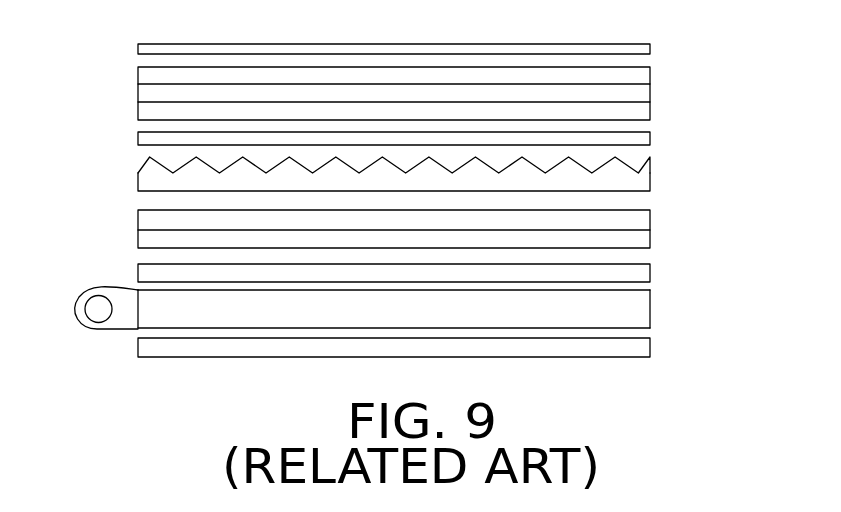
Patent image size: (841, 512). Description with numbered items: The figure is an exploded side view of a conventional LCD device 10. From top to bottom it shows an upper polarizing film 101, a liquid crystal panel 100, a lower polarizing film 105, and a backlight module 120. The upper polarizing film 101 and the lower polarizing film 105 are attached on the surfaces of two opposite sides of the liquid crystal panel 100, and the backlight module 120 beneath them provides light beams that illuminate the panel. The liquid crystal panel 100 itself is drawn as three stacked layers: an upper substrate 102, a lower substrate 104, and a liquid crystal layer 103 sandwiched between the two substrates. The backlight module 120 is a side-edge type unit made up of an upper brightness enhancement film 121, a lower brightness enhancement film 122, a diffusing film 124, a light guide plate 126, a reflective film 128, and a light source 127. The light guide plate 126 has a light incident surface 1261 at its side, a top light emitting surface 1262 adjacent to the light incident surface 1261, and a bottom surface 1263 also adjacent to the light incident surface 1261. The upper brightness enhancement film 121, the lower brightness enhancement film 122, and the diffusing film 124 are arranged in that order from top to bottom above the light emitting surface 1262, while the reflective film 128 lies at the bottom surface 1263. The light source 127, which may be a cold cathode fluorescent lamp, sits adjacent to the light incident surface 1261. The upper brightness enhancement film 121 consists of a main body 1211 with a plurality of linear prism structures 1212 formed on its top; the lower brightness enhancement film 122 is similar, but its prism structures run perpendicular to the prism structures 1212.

The LCD device 10 is at (398, 27).
The liquid crystal panel 100 is at (383, 93).
The upper polarizing film 101 is at (643, 50).
The upper substrate 102 is at (147, 74).
The liquid crystal layer 103 is at (150, 96).
The lower substrate 104 is at (150, 113).
The lower polarizing film 105 is at (641, 141).
The backlight module 120 is at (394, 269).
The upper brightness enhancement film 121 is at (388, 170).
The main body 1211 is at (140, 177).
The linear prism structures 1212 is at (142, 168).
The lower brightness enhancement film 122 is at (653, 210).
The diffusing film 124 is at (638, 277).
The light guide plate 126 is at (358, 309).
The light incident surface 1261 is at (135, 304).
The light emitting surface 1262 is at (136, 284).
The bottom surface 1263 is at (137, 330).
The light source 127 is at (95, 303).
The reflective film 128 is at (424, 347).